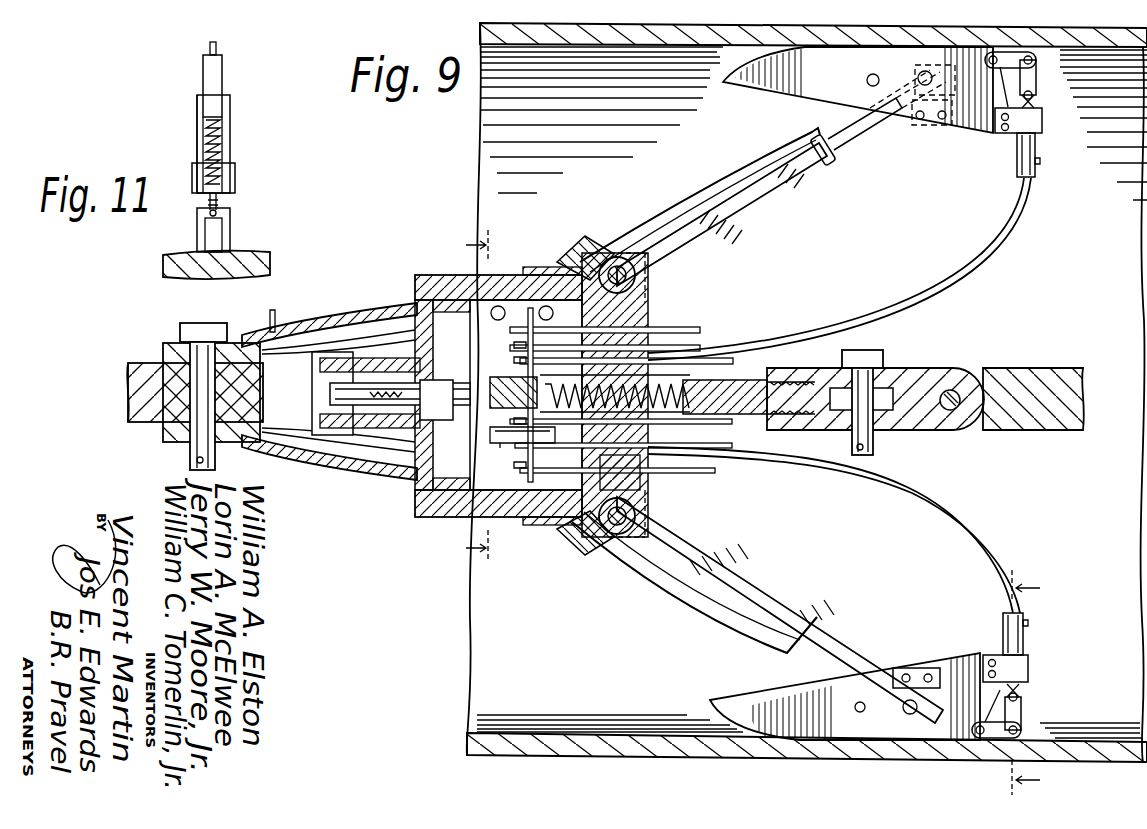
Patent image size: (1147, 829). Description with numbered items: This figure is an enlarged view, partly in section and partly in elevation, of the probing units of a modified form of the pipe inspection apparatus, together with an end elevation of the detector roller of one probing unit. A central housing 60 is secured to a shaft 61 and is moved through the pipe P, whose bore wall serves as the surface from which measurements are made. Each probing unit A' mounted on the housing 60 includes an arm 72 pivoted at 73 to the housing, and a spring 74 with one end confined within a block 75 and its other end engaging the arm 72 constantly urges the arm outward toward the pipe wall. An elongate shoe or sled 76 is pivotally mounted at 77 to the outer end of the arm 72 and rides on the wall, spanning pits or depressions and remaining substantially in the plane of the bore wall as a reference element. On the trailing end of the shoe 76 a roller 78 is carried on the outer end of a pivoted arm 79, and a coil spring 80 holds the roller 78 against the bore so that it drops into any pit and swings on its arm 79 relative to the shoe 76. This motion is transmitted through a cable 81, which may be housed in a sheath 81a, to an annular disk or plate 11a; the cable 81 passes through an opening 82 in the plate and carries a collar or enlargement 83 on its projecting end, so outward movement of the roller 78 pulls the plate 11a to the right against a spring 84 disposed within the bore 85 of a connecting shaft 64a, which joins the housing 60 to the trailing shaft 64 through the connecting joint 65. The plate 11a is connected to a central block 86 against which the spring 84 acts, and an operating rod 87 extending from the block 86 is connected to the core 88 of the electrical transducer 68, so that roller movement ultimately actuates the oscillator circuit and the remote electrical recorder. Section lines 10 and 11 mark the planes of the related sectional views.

In FIG. 9, the pipe P is at (466, 727).
In FIG. 11, the pipe P is at (165, 268).
In FIG. 9, the section line 10- 10 is at (460, 396).
In FIG. 9, the section line 11- 11 is at (1042, 683).
In FIG. 9, the shoe or sled 76 is at (795, 48).
In FIG. 9, the pivot of shoe on arm 77 is at (912, 78).
In FIG. 9, the arm 72 is at (762, 196).
In FIG. 9, the spring 74 is at (680, 190).
In FIG. 9, the probing unit A' is at (716, 141).
In FIG. 9, the block 75 is at (600, 250).
In FIG. 9, the central housing 60 is at (512, 520).
In FIG. 9, the pivot of arm 73 is at (648, 286).
In FIG. 9, the cable 81 is at (550, 345).
In FIG. 9, the opening in disk 82 is at (533, 362).
In FIG. 9, the bore of connecting shaft 85 is at (670, 452).
In FIG. 9, the collar or enlargement 83 is at (516, 368).
In FIG. 9, the central block 86 is at (500, 425).
In FIG. 9, the annular disk or plate 11a is at (530, 455).
In FIG. 9, the spring 84 is at (636, 486).
In FIG. 9, the shaft 61 is at (152, 365).
In FIG. 9, the transducer 68 is at (312, 332).
In FIG. 9, the operating rod 87 is at (410, 455).
In FIG. 9, the core of transducer 88 is at (380, 385).
In FIG. 9, the connecting shaft 64a is at (796, 432).
In FIG. 9, the connecting joint 65 is at (876, 440).
In FIG. 9, the trailing shaft 64 is at (1030, 432).
In FIG. 9, the sheath 81a is at (852, 324).
In FIG. 9, the pivoted arm 79 is at (1007, 55).
In FIG. 9, the roller 78 is at (1040, 58).
In FIG. 11, the roller 78 is at (230, 230).
In FIG. 9, the coil spring 80 is at (1040, 158).
In FIG. 11, the coil spring 80 is at (230, 150).